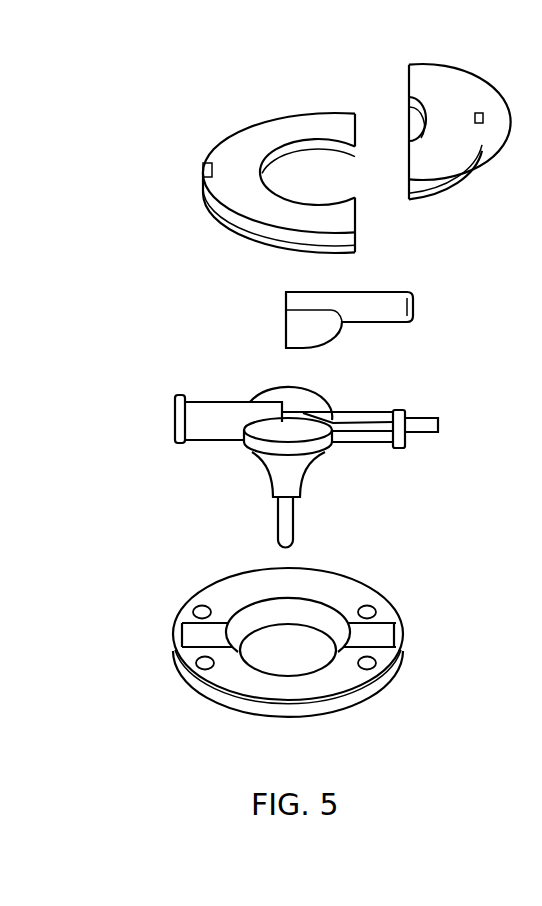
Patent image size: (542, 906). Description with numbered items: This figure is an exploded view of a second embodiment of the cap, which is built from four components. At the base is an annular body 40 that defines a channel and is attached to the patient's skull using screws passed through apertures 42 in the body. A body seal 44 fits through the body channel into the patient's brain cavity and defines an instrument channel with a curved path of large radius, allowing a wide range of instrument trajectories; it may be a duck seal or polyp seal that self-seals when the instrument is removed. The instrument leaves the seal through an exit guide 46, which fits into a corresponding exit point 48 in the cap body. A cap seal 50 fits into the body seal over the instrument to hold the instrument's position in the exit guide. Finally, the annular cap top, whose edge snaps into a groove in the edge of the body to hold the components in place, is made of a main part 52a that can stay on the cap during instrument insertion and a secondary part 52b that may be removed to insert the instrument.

The annular body 40 is at (388, 686).
The apertures 42 is at (368, 605).
The body seal 44 is at (312, 396).
The exit guide 46 is at (371, 442).
The exit point 48 is at (394, 634).
The cap seal 50 is at (413, 297).
The main part 52a is at (242, 131).
The secondary part 52b is at (468, 91).